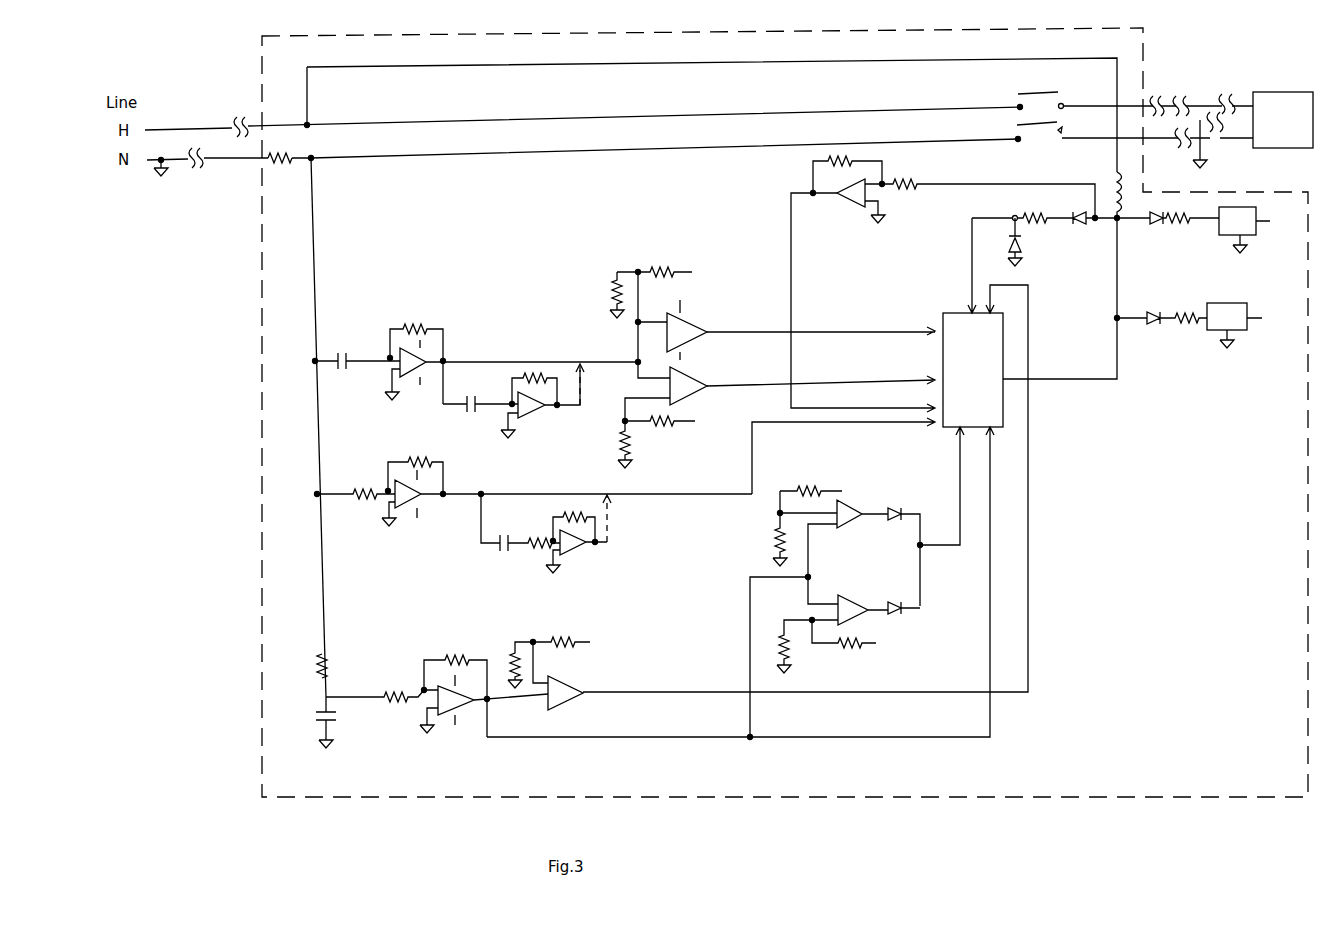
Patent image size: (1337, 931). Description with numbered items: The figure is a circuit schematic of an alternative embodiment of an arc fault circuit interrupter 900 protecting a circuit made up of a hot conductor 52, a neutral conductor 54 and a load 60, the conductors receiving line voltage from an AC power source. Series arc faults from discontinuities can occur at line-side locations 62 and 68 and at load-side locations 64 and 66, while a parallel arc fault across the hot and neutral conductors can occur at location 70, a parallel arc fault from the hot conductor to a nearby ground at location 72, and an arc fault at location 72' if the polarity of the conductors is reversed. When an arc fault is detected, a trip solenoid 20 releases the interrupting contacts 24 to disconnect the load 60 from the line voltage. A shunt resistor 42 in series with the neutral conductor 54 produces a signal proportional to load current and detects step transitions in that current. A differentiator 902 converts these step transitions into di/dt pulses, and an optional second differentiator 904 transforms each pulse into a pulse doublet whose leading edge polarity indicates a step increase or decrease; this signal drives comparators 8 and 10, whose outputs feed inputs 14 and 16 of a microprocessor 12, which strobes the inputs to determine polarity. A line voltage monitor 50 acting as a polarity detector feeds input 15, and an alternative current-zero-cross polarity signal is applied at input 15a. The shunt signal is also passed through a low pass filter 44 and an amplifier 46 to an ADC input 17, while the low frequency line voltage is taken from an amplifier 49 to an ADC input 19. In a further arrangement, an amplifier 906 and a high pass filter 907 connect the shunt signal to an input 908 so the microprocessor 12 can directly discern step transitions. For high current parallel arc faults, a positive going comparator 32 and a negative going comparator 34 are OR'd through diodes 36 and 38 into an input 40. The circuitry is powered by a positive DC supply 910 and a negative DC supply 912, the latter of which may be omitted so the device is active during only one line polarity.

The arc fault circuit interrupter 900 is at (246, 54).
The hot conductor 52 is at (180, 126).
The line-side series arc fault location 62 is at (228, 108).
The neutral conductor 54 is at (177, 172).
The line-side series arc fault location 68 is at (200, 176).
The shunt resistor 42 is at (277, 173).
The interrupting contacts 24 is at (1033, 74).
The trip solenoid 20 is at (1095, 173).
The parallel arc fault location 70 is at (1155, 90).
The load-side series arc fault location 64 is at (1180, 92).
The parallel arc fault location 72 is at (1227, 84).
The load-side series arc fault location 66 is at (1176, 150).
The reversed-polarity arc fault location 72' is at (1227, 147).
The load 60 is at (1276, 90).
The amplifier 49 is at (838, 214).
The line voltage monitor 50 is at (1041, 243).
The input 15 is at (962, 296).
The input 15a is at (1005, 297).
The input 14 is at (926, 324).
The input 16 is at (928, 374).
The ADC input 19 is at (920, 404).
The input 908 is at (902, 435).
The microprocessor 12 is at (1005, 342).
The ADC input 17 is at (993, 438).
The input 40 is at (585, 680).
The positive DC supply 910 is at (1200, 240).
The negative DC supply 912 is at (1195, 342).
The comparator 8 is at (693, 314).
The comparator 10 is at (693, 370).
The differentiator 902 is at (415, 306).
The second differentiator 904 is at (545, 425).
The amplifier 906 is at (418, 448).
The high pass filter 907 is at (588, 563).
The low pass filter 44 is at (311, 691).
The amplifier 46 is at (425, 642).
The positive going signal detecting comparator 32 is at (850, 527).
The negative going signal detecting comparator 34 is at (853, 595).
The OR diode 36 is at (904, 500).
The OR diode 38 is at (910, 610).